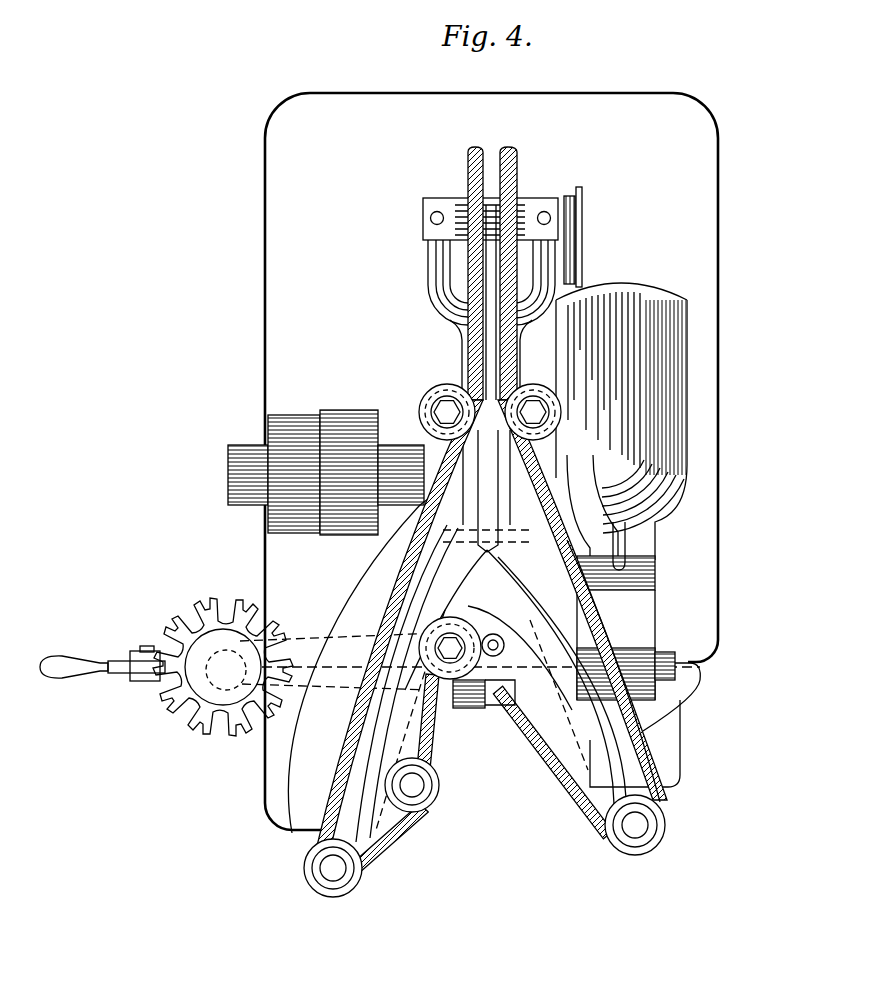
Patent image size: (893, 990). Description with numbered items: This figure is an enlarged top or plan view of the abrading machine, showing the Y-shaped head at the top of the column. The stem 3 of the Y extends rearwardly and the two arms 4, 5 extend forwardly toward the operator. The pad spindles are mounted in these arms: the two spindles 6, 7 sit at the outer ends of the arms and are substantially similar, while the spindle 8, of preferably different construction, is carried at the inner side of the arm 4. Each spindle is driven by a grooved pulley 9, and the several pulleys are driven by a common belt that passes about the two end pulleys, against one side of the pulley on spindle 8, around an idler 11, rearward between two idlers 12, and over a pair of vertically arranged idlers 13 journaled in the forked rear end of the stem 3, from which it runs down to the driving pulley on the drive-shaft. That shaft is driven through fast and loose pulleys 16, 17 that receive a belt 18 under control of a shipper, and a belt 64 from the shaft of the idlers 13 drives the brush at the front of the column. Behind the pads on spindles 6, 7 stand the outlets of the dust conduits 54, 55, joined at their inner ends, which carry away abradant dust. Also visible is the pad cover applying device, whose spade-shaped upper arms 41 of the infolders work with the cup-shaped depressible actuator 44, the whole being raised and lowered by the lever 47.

The stem 3 is at (462, 362).
The arm 4 is at (338, 762).
The arm 5 is at (653, 793).
The spindle 6 is at (330, 868).
The spindle 7 is at (634, 826).
The spindle 8 is at (410, 784).
The grooved pulley 9 is at (418, 797).
The idler 11 is at (455, 636).
The idlers 12 is at (424, 402).
The vertically arranged idlers 13 is at (467, 176).
The fast pulley 16 is at (344, 535).
The loose pulley 17 is at (290, 533).
The belt 18 is at (568, 774).
The upper arms of infolders 41 is at (212, 622).
The depressible actuator 44 is at (204, 655).
The lever 47 is at (131, 672).
The conduit 54 is at (323, 730).
The conduit 55 is at (576, 216).
The belt 64 is at (580, 275).